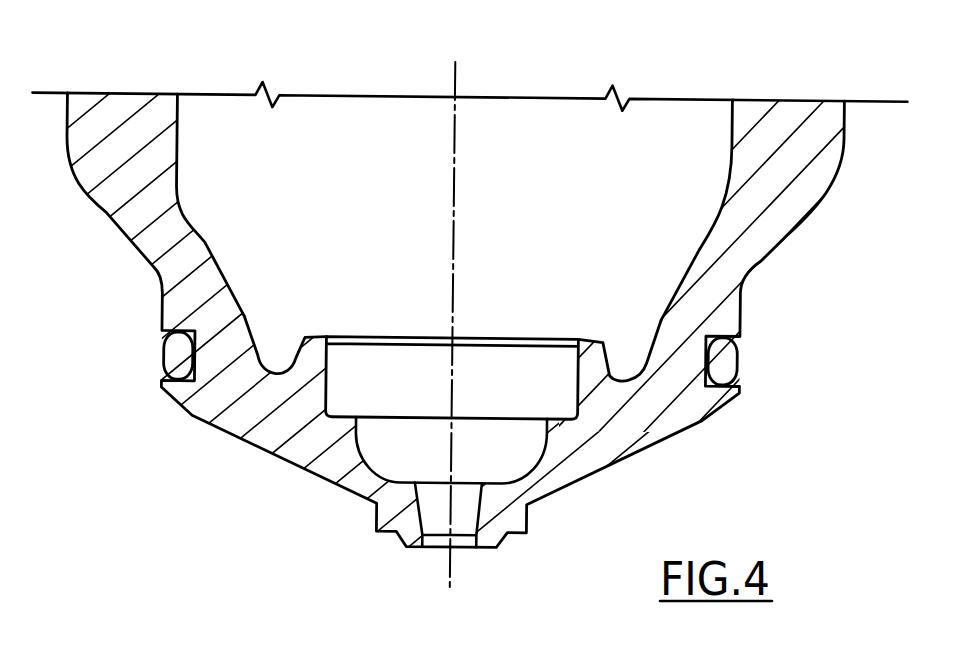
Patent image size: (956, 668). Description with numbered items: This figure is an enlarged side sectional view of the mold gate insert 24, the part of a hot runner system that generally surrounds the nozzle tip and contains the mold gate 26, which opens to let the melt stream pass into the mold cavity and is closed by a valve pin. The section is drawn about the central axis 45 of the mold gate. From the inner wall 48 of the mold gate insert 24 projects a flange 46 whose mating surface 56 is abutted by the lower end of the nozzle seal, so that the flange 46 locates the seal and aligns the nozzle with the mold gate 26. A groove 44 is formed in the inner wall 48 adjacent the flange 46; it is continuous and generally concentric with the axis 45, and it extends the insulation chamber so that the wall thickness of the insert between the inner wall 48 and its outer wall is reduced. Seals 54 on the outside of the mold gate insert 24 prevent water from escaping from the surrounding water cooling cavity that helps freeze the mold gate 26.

The mold gate insert 24 is at (845, 151).
The mold gate 26 is at (462, 543).
The groove 44 is at (632, 345).
The axis 45 is at (455, 83).
The flange 46 is at (307, 355).
The inner wall 48 is at (176, 252).
The seals 54 is at (728, 362).
The mating surface 56 is at (343, 340).